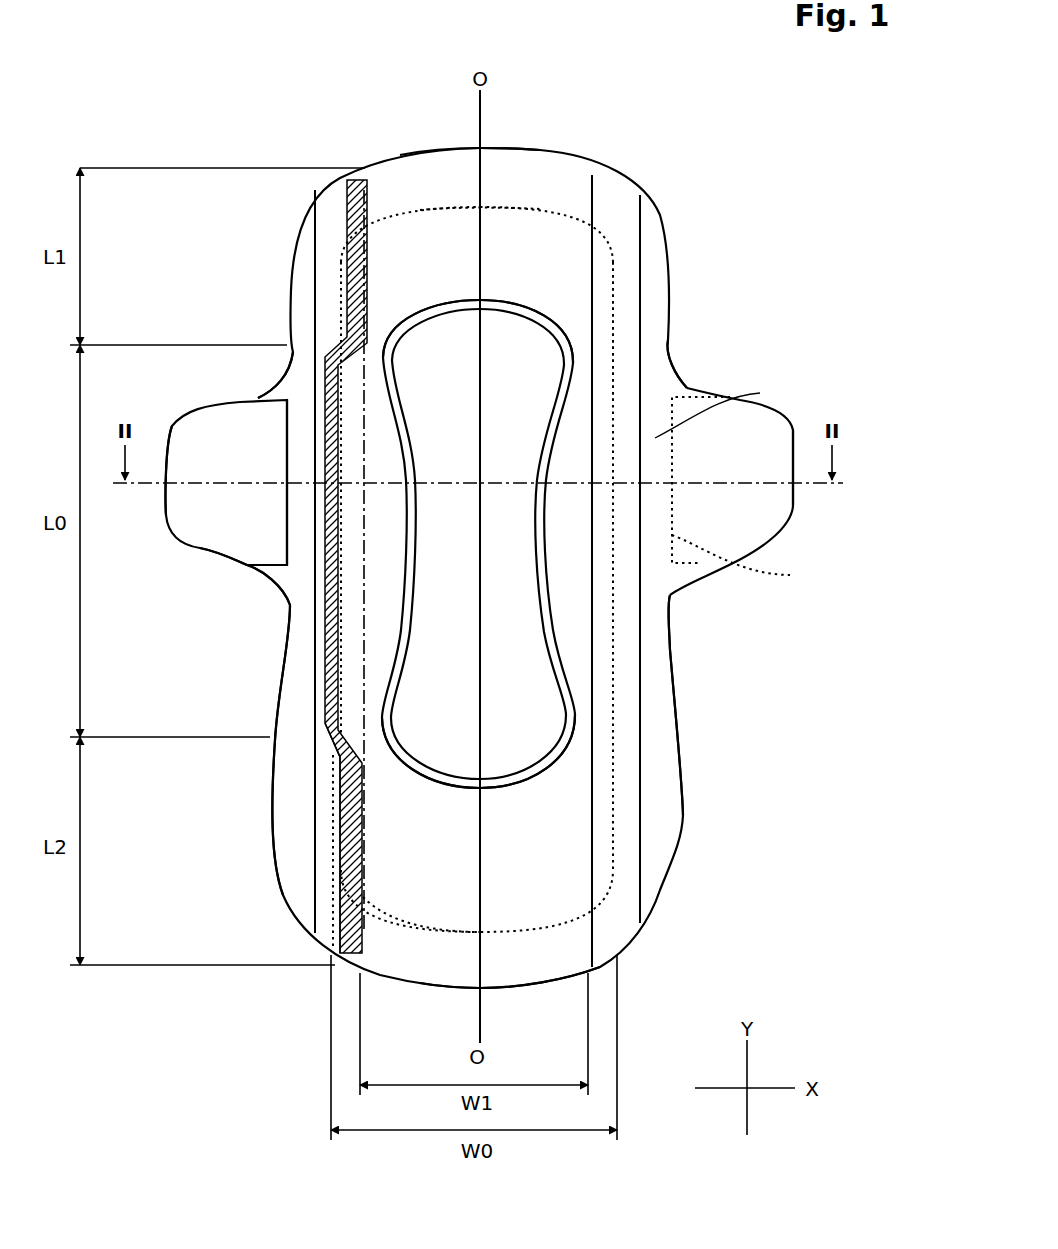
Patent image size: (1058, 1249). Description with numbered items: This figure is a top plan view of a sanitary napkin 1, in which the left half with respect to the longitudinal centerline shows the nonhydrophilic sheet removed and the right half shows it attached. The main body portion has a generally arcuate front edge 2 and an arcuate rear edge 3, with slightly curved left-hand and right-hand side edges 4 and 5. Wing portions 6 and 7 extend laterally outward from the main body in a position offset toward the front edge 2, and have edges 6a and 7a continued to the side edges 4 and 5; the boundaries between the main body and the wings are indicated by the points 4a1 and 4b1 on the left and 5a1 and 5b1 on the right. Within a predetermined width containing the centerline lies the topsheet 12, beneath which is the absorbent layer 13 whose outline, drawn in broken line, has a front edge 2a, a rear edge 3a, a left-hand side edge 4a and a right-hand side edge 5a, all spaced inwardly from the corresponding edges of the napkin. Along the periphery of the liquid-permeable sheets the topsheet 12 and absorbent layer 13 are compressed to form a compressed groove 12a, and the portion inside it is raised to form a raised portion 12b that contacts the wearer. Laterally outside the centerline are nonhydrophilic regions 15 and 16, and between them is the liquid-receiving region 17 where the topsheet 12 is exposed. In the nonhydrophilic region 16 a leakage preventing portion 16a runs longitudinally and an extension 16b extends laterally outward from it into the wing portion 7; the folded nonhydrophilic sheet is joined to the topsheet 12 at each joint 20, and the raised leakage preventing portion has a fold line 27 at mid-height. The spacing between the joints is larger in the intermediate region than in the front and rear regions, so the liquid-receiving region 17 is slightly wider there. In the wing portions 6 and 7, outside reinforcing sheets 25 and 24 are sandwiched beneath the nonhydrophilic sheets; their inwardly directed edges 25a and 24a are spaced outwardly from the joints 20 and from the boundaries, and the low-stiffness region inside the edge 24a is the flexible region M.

The sanitary napkin 1 is at (650, 128).
The front edge 2 is at (526, 148).
The front edge of absorbent layer 2a is at (535, 210).
The rear edge 3 is at (523, 988).
The rear edge of absorbent layer 3a is at (408, 920).
The left-hand side edge 4 is at (280, 680).
The left-hand side edge of absorbent layer 4a is at (335, 808).
The boundary 4a1 is at (290, 603).
The boundary 4b1 is at (290, 345).
The right-hand side edge 5 is at (673, 690).
The right-hand side edge of absorbent layer 5a is at (612, 713).
The boundary 5a1 is at (667, 603).
The boundary 5b1 is at (665, 358).
The wing portion 6 is at (206, 397).
The edge of wing portion 6a is at (167, 437).
The wing portion 7 is at (791, 421).
The edge of wing portion 7a is at (797, 505).
The topsheet 12 is at (306, 891).
The compressed groove 12a is at (527, 770).
The raised portion 12b is at (535, 345).
The absorbent layer 13 is at (446, 207).
The nonhydrophilic region 15 is at (368, 603).
The nonhydrophilic region 16 is at (625, 918).
The leakage preventing portion 16a is at (627, 636).
The extension 16b is at (665, 821).
The liquid-receiving region 17 is at (580, 270).
The joint 20 is at (356, 182).
The outside reinforcing sheet 24 is at (686, 397).
The inwardly directed edge 24a is at (748, 561).
The outside reinforcing sheet 25 is at (279, 571).
The inwardly directed edge 25a is at (287, 513).
The fold line 27 is at (592, 200).
The flexible region M is at (717, 407).